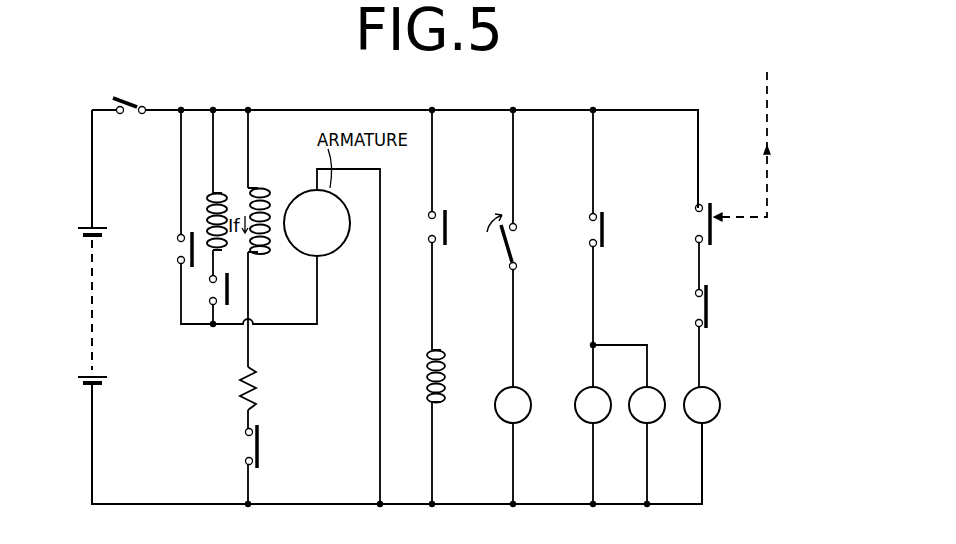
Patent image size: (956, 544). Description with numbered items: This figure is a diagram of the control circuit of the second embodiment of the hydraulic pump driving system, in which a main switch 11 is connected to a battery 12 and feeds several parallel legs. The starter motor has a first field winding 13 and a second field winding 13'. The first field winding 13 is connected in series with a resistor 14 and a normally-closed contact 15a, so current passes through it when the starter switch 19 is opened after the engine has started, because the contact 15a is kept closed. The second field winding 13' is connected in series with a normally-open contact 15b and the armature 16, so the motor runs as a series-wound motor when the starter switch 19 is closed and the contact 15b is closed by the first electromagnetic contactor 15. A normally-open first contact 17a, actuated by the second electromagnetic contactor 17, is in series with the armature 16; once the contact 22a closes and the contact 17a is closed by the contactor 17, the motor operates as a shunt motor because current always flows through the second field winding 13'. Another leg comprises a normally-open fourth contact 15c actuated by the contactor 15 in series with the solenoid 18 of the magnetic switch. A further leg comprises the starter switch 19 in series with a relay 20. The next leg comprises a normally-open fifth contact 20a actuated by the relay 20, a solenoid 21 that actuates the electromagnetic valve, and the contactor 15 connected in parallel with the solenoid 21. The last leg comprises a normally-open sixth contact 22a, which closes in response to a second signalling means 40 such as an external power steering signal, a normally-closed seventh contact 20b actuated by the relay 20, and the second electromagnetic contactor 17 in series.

The main switch 11 is at (139, 95).
The battery 12 is at (102, 224).
The first field winding 13 is at (276, 202).
The second field winding 13' is at (178, 220).
The resistor 14 is at (260, 400).
The first electromagnetic contactor 15 is at (604, 418).
The normally-closed contact 15a is at (248, 446).
The normally-open contact 15b is at (213, 291).
The normally-open fourth contact 15c is at (430, 223).
The armature 16 is at (335, 253).
The second electromagnetic contactor 17 is at (714, 418).
The normally-open first contact 17a is at (177, 249).
The solenoid 18 is at (445, 380).
The starter switch 19 is at (514, 245).
The relay 20 is at (526, 418).
The normally-open fifth contact 20a is at (605, 232).
The normally-closed seventh contact 20b is at (708, 308).
The solenoid 21 is at (657, 418).
The normally-open sixth contact 22a is at (690, 223).
The second signalling means 40 is at (747, 133).